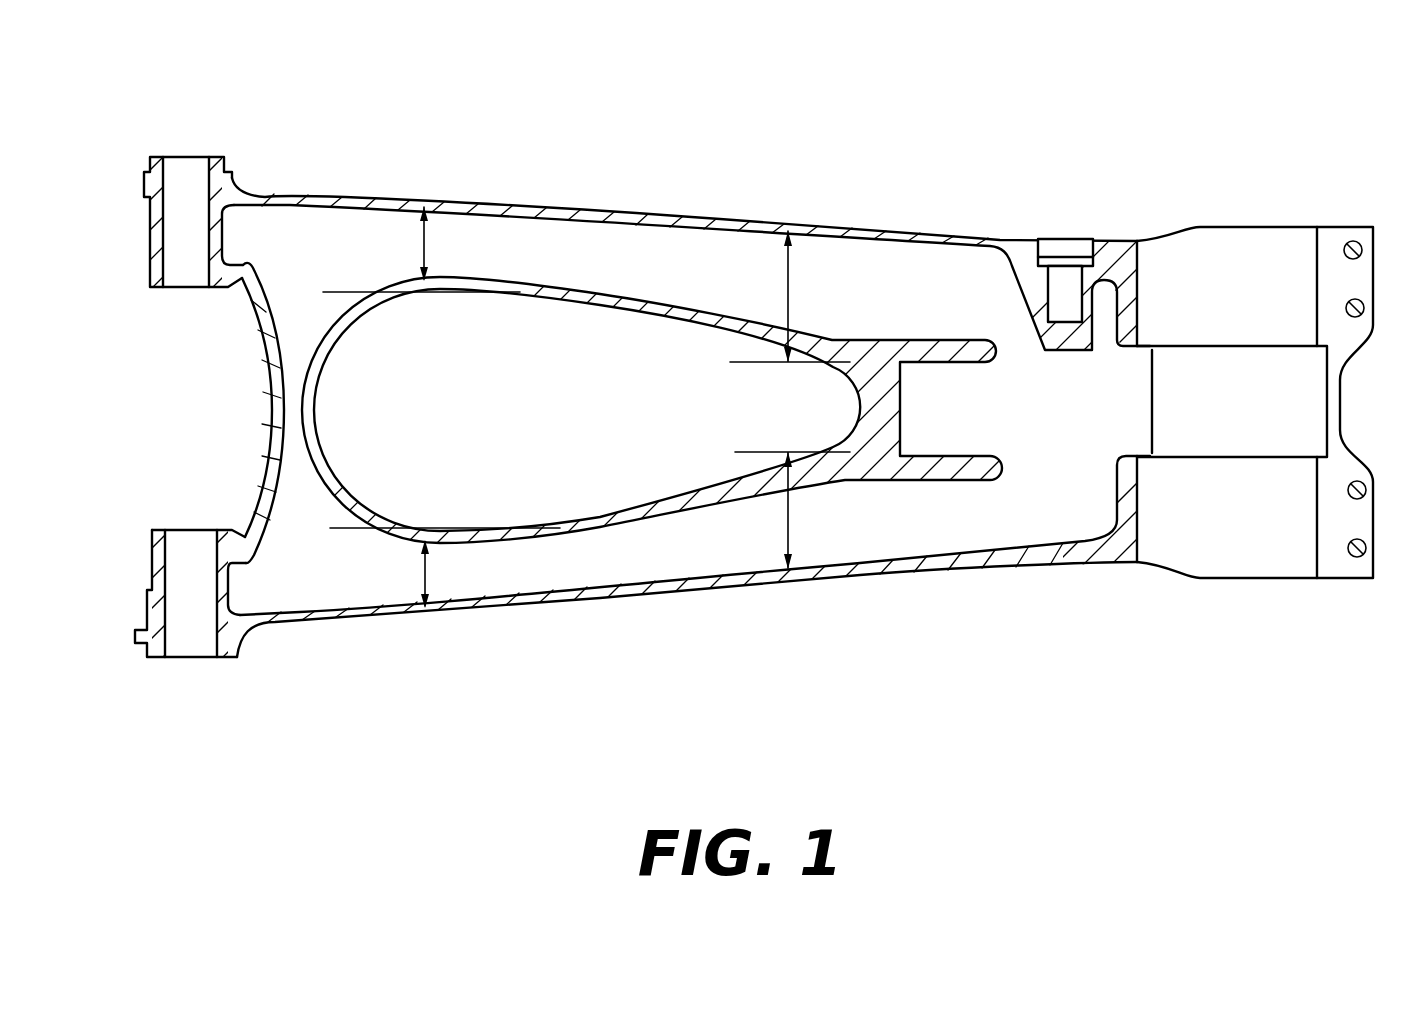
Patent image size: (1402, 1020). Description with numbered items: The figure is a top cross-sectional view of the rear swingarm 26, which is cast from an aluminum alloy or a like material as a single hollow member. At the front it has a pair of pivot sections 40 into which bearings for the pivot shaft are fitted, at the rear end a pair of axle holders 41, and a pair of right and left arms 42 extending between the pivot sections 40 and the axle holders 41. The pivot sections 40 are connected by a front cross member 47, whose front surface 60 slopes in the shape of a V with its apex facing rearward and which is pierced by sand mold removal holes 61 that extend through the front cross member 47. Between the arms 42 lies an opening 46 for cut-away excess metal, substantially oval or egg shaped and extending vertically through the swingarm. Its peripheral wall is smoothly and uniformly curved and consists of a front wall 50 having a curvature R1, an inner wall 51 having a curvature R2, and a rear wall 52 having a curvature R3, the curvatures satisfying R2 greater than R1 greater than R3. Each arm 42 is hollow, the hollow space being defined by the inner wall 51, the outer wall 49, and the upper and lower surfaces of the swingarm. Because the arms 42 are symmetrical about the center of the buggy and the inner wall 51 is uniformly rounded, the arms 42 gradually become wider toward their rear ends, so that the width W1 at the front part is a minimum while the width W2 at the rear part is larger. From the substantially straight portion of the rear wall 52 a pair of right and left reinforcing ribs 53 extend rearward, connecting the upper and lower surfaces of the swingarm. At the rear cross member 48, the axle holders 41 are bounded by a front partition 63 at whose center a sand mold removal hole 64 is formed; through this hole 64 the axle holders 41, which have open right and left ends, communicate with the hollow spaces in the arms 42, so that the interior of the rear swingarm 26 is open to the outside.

The rear swingarm 26 is at (519, 142).
The pivot section 40 is at (150, 160).
The axle holder 41 is at (1283, 270).
The arm 42 is at (750, 253).
The opening 46 is at (586, 430).
The front cross member 47 is at (335, 470).
The rear cross member 48 is at (1042, 513).
The outer wall 49 is at (657, 218).
The front wall 50 is at (330, 408).
The inner wall 51 is at (688, 320).
The rear wall 52 is at (858, 410).
The reinforcing rib 53 is at (950, 355).
The front surface 60 is at (268, 408).
The sand mold removal hole 61 is at (257, 335).
The front partition 63 is at (1140, 293).
The sand mold removal hole 64 is at (1127, 462).
The width at the front part W1 is at (441, 407).
The width at the rear part W2 is at (790, 400).
The curvature of the front wall R1 is at (340, 365).
The curvature of the inner wall R2 is at (488, 293).
The curvature of the rear wall R3 is at (838, 446).